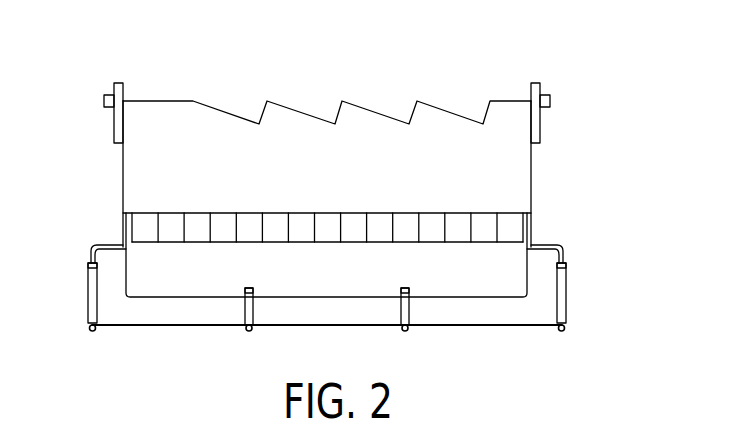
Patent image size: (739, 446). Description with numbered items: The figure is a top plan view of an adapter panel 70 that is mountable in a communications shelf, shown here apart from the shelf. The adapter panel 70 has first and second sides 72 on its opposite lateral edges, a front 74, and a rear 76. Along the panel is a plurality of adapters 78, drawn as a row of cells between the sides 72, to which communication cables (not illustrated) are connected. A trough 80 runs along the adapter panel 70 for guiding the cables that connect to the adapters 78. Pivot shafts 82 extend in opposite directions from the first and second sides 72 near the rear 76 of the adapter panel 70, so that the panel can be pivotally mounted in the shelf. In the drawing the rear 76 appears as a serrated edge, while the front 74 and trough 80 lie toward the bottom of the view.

The adapter panel 70 is at (556, 156).
The first and second sides 72 is at (122, 168).
The front 74 is at (563, 236).
The rear 76 is at (436, 83).
The adapters 78 is at (273, 230).
The trough 80 is at (190, 315).
The pivot shafts 82 is at (104, 101).